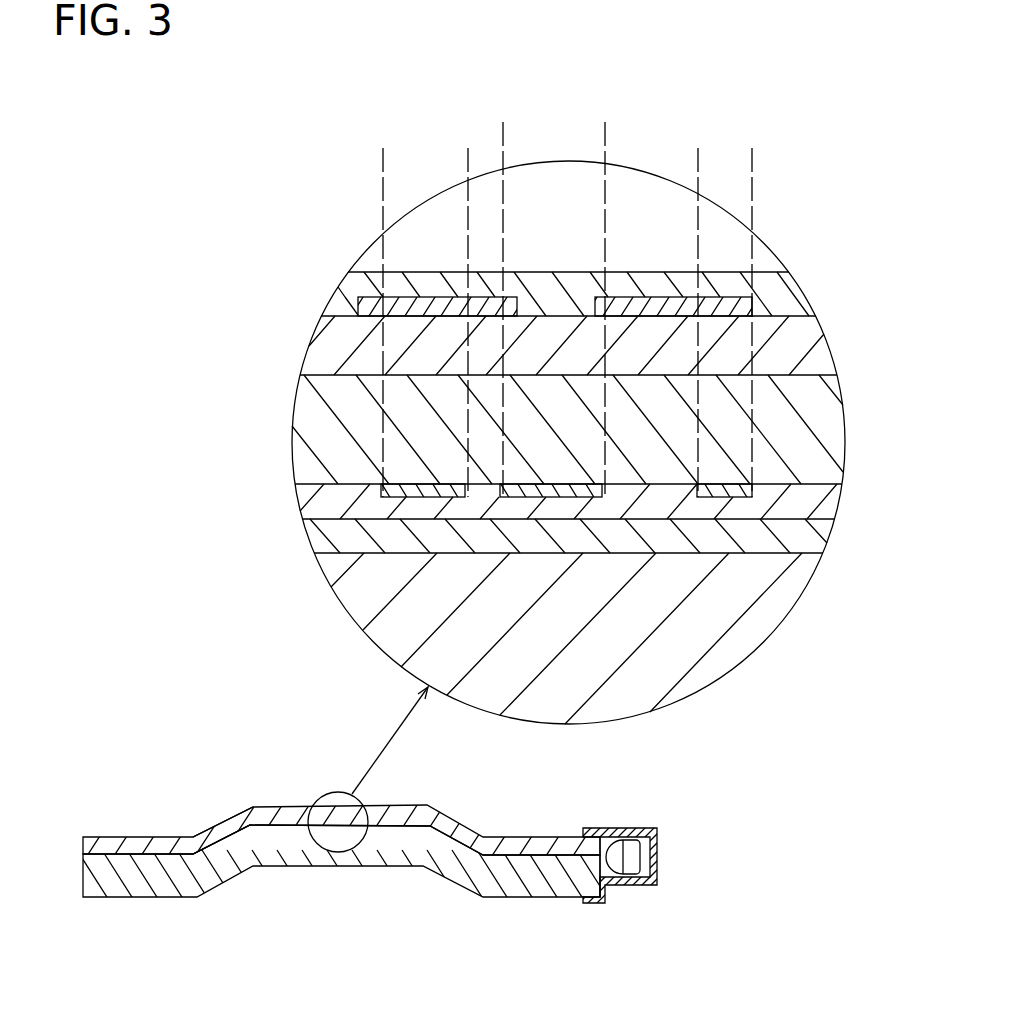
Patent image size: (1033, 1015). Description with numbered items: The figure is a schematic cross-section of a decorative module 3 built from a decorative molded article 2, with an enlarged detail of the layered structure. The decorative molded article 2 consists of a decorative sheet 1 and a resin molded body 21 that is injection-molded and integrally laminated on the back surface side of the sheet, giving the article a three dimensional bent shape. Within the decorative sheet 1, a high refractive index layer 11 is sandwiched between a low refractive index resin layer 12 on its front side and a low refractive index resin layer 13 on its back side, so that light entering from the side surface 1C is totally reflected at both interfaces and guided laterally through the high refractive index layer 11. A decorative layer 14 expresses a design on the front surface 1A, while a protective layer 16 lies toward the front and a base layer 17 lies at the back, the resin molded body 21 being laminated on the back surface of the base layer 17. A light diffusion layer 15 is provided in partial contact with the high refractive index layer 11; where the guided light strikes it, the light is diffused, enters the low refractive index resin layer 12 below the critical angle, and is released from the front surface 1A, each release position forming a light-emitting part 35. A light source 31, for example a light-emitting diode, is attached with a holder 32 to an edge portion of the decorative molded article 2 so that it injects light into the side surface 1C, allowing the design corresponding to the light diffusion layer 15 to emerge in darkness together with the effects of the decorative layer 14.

The decorative sheet 1 is at (133, 835).
The front surface 1A is at (652, 272).
The side surface 1C is at (602, 848).
The decorative molded article 2 is at (220, 808).
The decorative module 3 is at (273, 733).
The high refractive index layer 11 is at (312, 433).
The low refractive index resin layer 12 is at (325, 347).
The low refractive index resin layer 13 is at (313, 507).
The decorative layer 14 is at (352, 283).
The light diffusion layer 15 is at (407, 499).
The protective layer 16 is at (337, 300).
The base layer 17 is at (318, 551).
The resin molded body 21 is at (363, 605).
The light source 31 is at (633, 850).
The holder 32 is at (660, 871).
The light-emitting part 35 is at (468, 160).